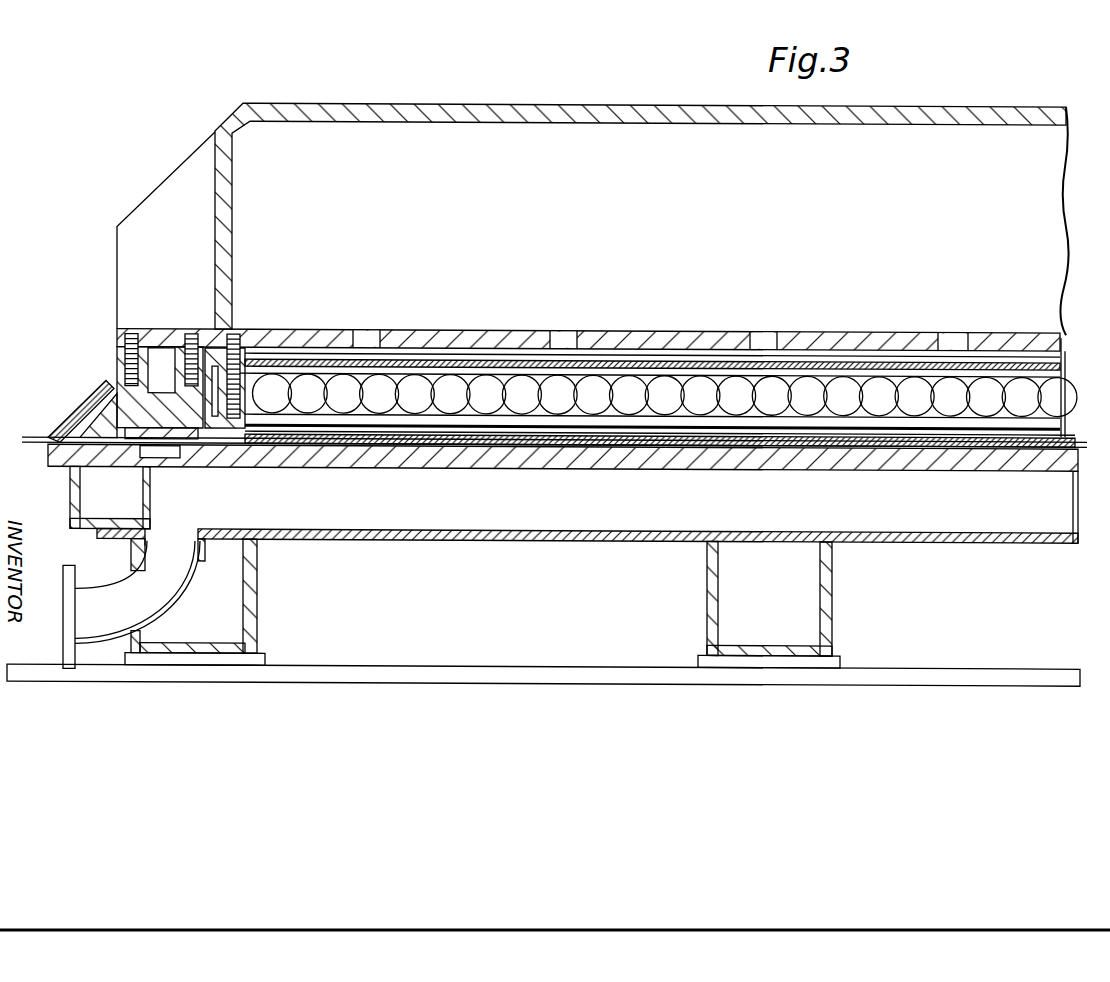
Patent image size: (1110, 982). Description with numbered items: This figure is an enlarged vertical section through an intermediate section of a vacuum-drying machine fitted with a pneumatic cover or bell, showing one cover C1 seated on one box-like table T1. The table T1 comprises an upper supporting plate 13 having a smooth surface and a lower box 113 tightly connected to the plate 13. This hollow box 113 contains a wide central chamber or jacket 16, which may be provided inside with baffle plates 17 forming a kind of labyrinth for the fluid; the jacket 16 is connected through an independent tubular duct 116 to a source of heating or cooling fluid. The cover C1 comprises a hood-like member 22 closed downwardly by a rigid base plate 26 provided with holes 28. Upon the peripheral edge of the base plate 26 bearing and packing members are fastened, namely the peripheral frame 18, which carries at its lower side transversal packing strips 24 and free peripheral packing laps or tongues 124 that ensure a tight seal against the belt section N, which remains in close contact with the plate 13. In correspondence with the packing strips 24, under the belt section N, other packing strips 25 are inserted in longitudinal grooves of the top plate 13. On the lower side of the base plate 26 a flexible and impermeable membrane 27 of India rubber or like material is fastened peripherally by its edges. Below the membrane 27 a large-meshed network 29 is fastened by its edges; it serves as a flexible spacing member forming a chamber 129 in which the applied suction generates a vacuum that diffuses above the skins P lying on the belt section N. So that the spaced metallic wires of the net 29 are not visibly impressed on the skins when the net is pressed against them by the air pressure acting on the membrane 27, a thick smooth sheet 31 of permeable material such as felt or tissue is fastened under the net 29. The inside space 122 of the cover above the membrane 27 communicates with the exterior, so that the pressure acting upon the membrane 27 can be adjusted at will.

The hood-like member 22 is at (618, 110).
The cover C1 is at (343, 99).
The inside space 122 is at (623, 206).
The rigid base plate 26 is at (483, 335).
The holes 28 is at (362, 336).
The flexible and impermeable membrane 27 is at (678, 360).
The large-meshed network 29 is at (846, 372).
The chamber 129 is at (985, 378).
The thick smooth sheet 31 is at (820, 432).
The skins P is at (320, 426).
The belt section N is at (33, 433).
The upper supporting plate 13 is at (601, 466).
The packing strips 25 is at (165, 449).
The baffle plates 17 is at (1073, 512).
The central chamber or jacket 16 is at (432, 495).
The lower box 113 is at (554, 540).
The box-like table T1 is at (406, 546).
The transversal packing strips 24 is at (63, 465).
The peripheral frame 18 is at (116, 362).
The peripheral packing laps or tongues 124 is at (78, 423).
The tubular duct 116 is at (110, 587).